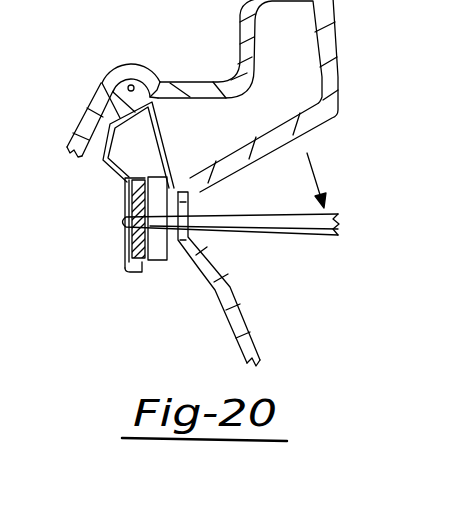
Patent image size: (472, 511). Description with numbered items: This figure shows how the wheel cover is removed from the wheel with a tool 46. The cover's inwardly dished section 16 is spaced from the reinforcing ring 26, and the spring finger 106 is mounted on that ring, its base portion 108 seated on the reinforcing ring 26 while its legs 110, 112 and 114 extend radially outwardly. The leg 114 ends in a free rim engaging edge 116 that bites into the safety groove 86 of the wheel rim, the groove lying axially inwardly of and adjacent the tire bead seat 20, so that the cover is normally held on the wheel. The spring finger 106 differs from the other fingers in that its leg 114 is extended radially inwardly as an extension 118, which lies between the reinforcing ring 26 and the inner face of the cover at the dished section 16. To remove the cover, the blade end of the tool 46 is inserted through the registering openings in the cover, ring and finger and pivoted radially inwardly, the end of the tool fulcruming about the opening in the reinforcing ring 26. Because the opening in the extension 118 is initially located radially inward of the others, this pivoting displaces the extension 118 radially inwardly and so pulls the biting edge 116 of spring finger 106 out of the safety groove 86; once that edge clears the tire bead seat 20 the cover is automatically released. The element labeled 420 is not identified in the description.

The tire bead seat 20 is at (189, 82).
The safety groove 86 is at (133, 85).
The free rim engaging edge 116 is at (161, 81).
The leg 114 is at (102, 83).
The leg 112 is at (108, 145).
The extension 118 is at (171, 148).
The reinforcing ring 26 is at (143, 166).
The leg 110 is at (117, 180).
The base portion 108 is at (127, 250).
The spring finger 106 is at (115, 238).
The spacer block 420 is at (157, 267).
The inwardly dished section 16 is at (188, 190).
The tool 46 is at (307, 228).